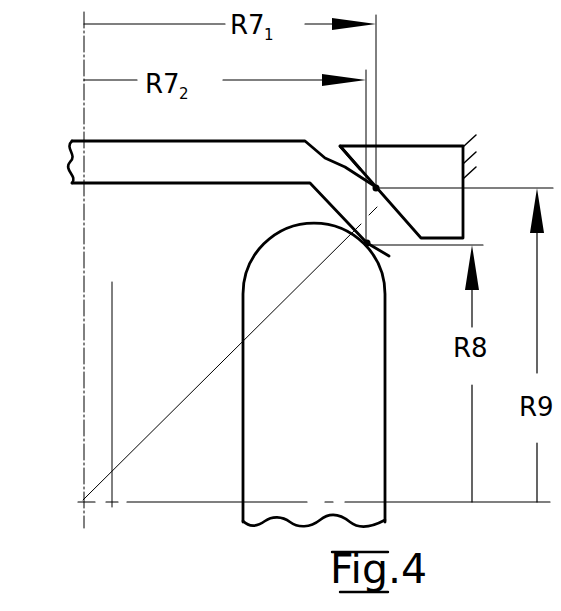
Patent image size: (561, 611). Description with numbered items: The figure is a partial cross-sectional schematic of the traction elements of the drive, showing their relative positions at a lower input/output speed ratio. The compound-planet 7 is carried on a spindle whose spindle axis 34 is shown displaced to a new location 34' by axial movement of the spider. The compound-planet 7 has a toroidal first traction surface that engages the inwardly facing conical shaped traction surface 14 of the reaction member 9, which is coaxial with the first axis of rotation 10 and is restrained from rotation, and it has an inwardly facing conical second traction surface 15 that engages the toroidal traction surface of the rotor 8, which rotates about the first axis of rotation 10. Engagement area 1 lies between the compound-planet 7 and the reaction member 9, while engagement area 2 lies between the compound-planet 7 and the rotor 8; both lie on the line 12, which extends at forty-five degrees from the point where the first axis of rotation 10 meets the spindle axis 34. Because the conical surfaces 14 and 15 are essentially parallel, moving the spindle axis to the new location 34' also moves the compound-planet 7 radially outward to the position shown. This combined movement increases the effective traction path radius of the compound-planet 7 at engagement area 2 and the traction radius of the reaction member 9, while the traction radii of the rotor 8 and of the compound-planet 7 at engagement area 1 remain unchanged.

The engagement area 1 is at (379, 186).
The engagement area 2 is at (367, 247).
The compound-planet 7 is at (290, 147).
The rotor 8 is at (373, 432).
The reaction member 9 is at (440, 150).
The first axis of rotation 10 is at (165, 502).
The line 12 is at (153, 432).
The conical shaped traction surface 14 is at (342, 150).
The second traction surface 15 is at (327, 198).
The spindle axis 34 is at (141, 394).
The new location of spindle axis 34' is at (120, 270).